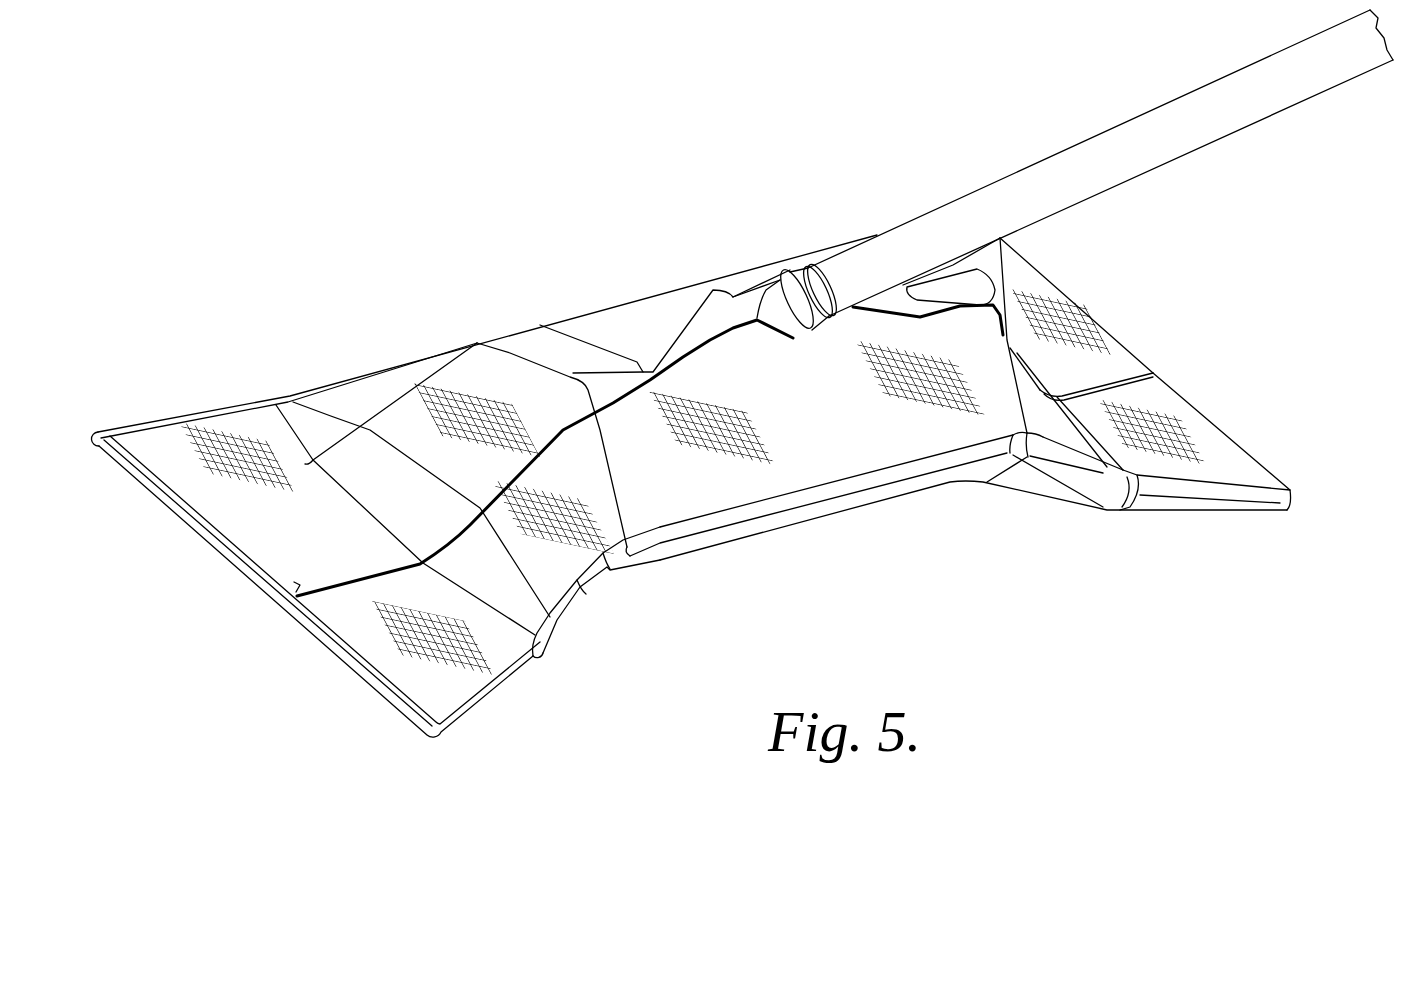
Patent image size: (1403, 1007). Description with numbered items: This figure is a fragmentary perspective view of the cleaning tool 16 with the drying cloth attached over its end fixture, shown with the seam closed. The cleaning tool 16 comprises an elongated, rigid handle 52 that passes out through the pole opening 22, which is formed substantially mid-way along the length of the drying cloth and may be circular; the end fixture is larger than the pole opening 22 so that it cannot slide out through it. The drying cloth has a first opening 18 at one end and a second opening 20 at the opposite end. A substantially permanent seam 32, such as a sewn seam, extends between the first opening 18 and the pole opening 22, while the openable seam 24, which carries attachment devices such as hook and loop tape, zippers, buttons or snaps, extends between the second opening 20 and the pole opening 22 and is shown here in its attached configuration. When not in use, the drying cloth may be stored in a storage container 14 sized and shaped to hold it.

The storage container 14 is at (1243, 468).
The cleaning tool 16 is at (1086, 130).
The first opening 18 is at (322, 644).
The second opening 20 is at (1128, 346).
The pole opening 22 is at (783, 333).
The openable seam 24 is at (1117, 390).
The permanent seam 32 is at (553, 440).
The handle 52 is at (1262, 108).